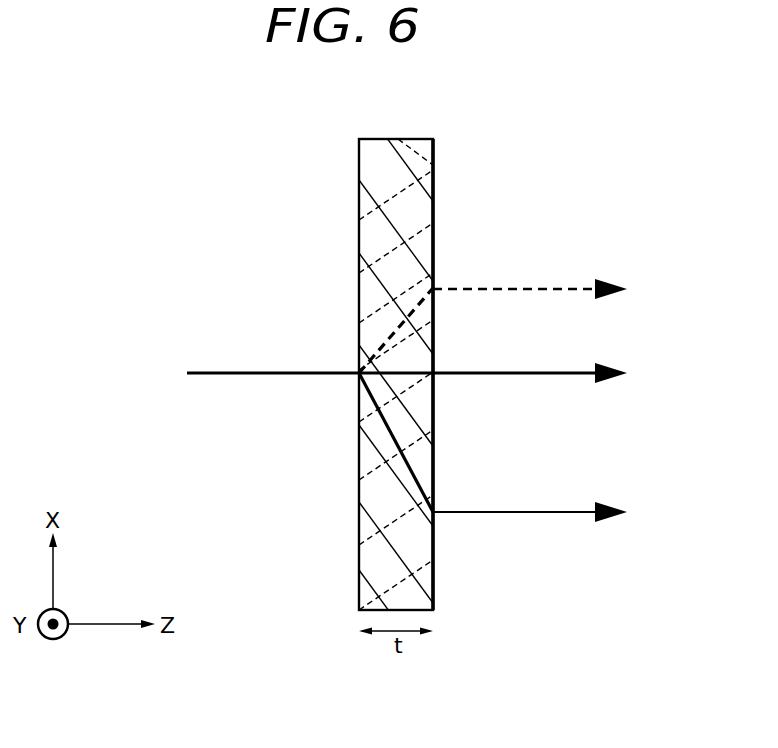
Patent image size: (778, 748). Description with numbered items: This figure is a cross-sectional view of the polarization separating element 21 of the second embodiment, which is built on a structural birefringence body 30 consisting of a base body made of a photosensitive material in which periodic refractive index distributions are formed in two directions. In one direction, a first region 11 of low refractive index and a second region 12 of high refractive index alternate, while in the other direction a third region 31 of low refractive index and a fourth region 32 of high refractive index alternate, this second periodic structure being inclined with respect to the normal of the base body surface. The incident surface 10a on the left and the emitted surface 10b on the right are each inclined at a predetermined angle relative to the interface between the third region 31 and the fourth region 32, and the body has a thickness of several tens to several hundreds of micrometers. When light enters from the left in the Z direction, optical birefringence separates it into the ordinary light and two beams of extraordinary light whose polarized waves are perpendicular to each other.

The polarization separating element 21 is at (157, 262).
The structural birefringence body 30 is at (447, 205).
The incident surface 10a is at (359, 160).
The emitted surface 10b is at (433, 177).
The first region 11 is at (362, 522).
The second region 12 is at (378, 502).
The third region 31 is at (357, 303).
The fourth region 32 is at (357, 288).